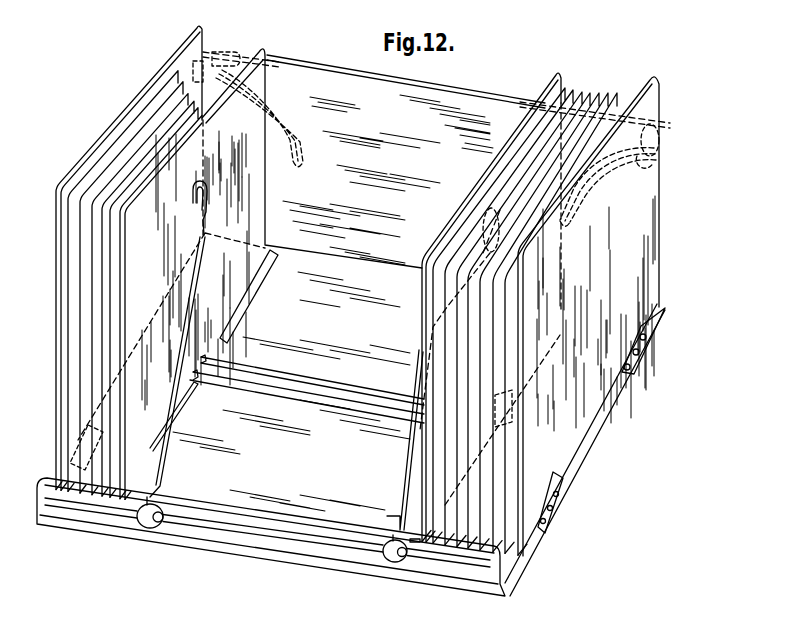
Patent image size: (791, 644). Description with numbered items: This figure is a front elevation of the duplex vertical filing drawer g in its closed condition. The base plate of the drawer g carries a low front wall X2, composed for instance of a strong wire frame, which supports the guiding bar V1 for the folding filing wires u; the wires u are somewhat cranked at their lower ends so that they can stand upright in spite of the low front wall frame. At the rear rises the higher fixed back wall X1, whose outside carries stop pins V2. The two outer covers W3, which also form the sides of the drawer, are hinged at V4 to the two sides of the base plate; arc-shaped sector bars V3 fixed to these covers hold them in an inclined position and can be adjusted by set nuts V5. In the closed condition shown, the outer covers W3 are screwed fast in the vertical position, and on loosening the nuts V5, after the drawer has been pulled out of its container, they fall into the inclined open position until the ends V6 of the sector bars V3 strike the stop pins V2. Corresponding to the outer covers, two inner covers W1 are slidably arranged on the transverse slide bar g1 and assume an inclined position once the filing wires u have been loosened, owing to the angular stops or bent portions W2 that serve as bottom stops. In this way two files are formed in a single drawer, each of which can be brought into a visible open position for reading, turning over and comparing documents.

The fixed back wall X1 is at (413, 94).
The front wall X2 is at (267, 514).
The inner cover W1 is at (519, 116).
The angular stop W2 is at (417, 530).
The outer cover W3 is at (640, 92).
The guiding bar V1 is at (180, 520).
The stop pin V2 is at (236, 51).
The arc-shaped sector bar V3 is at (274, 106).
The hinge V4 is at (641, 333).
The set nut V5 is at (666, 104).
The sector bar end V6 is at (303, 164).
The folding filing wire u is at (165, 467).
The duplex vertical filing drawer g is at (353, 560).
The transverse slide bar g1 is at (368, 397).